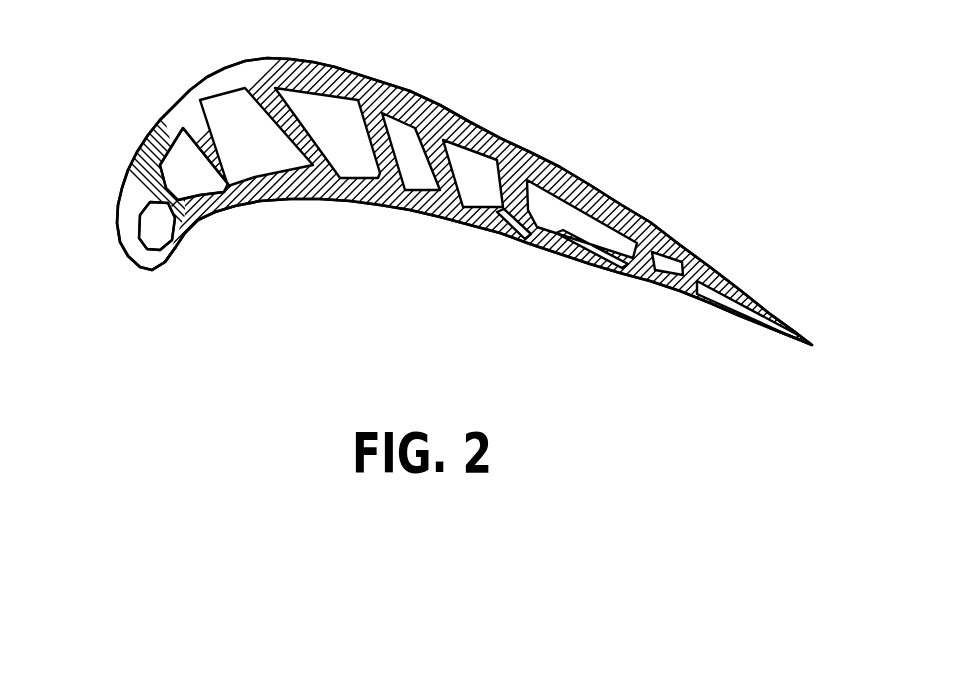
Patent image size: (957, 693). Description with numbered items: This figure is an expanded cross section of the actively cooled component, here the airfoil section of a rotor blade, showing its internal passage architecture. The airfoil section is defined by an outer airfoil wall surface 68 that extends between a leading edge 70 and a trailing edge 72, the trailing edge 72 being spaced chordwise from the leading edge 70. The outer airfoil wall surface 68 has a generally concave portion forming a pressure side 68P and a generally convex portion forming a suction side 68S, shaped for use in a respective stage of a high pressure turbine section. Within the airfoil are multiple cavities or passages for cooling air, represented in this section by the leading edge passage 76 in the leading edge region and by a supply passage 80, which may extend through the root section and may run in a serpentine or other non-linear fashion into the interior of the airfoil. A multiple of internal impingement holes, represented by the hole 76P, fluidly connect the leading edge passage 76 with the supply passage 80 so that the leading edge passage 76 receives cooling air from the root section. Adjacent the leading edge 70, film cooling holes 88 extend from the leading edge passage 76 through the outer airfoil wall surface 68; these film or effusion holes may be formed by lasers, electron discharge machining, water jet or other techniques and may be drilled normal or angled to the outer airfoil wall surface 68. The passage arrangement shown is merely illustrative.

The outer airfoil wall surface 68 is at (507, 136).
The suction side 68S is at (377, 85).
The pressure side 68P is at (393, 210).
The leading edge 70 is at (128, 272).
The trailing edge 72 is at (820, 345).
The leading edge passage 76 is at (154, 218).
The internal impingement hole 76P is at (172, 207).
The supply passage 80 is at (200, 166).
The film cooling holes 88 is at (167, 264).